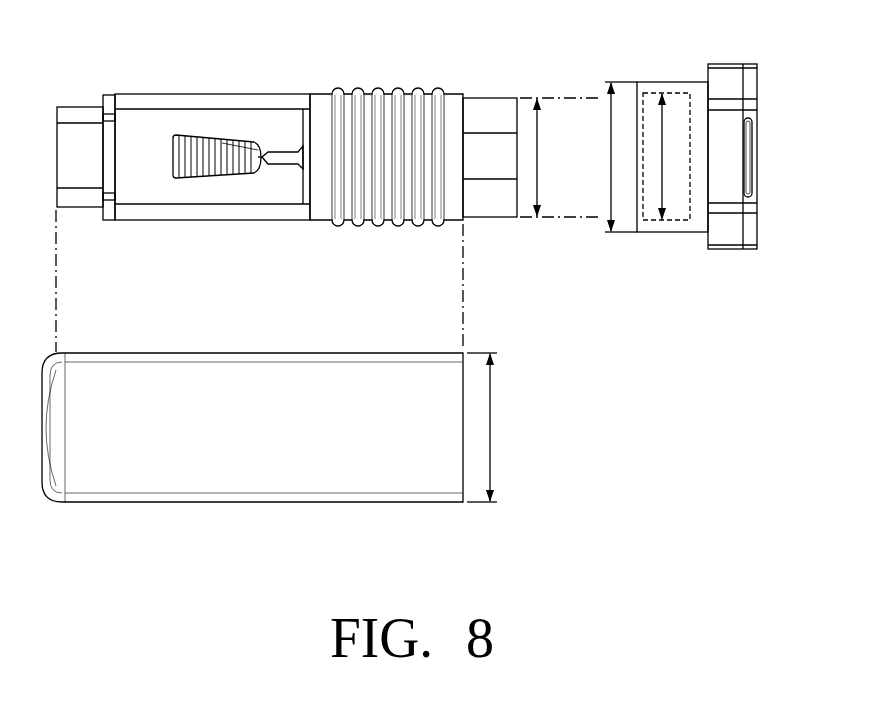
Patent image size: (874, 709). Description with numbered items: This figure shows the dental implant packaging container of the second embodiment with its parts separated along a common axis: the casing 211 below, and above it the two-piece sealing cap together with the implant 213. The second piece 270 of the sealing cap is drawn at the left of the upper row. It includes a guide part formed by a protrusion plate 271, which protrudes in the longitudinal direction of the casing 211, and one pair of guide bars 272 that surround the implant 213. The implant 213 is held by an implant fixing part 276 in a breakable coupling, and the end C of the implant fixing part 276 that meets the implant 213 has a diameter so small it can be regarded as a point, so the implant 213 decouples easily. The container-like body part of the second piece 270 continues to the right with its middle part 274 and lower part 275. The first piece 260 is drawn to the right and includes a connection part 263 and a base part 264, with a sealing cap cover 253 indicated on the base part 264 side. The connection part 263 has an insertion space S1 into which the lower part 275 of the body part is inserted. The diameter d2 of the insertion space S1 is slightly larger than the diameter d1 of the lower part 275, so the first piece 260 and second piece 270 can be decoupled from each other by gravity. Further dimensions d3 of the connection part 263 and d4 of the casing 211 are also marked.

The casing 211 is at (300, 505).
The implant 213 is at (204, 136).
The sealing cap cover 253 is at (759, 86).
The first piece 260 is at (605, 260).
The connection part 263 is at (667, 233).
The base part 264 is at (727, 250).
The second piece 270 is at (339, 246).
The protrusion plate 271 is at (71, 112).
The guide bars 272 is at (142, 96).
The middle part 274 is at (393, 95).
The lower part 275 is at (478, 98).
The implant fixing part 276 is at (278, 152).
The end of the implant fixing part C is at (251, 148).
The insertion space S1 is at (676, 128).
The diameter of the lower part d1 is at (561, 157).
The diameter of the insertion space d2 is at (651, 156).
The diameter d3 is at (611, 157).
The diameter d4 is at (491, 427).